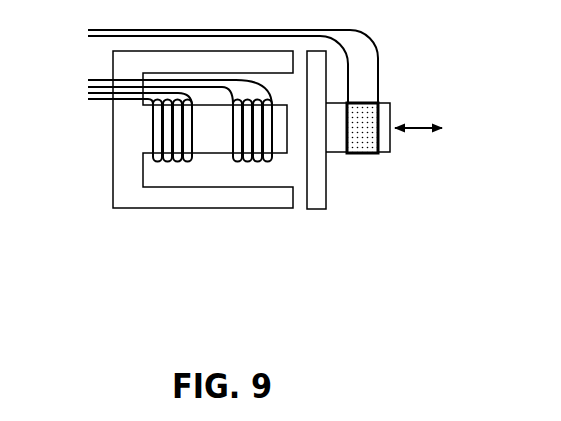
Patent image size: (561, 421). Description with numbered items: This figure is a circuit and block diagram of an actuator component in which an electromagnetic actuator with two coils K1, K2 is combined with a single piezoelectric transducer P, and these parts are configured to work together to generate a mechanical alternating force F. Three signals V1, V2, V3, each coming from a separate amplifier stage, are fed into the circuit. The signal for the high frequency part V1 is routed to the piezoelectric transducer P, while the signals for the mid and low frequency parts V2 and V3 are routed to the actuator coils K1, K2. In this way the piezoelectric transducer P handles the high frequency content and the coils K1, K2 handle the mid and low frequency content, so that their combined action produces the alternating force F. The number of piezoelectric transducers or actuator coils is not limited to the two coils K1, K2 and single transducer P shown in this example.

The high frequency signal V1 is at (220, 63).
The mid frequency signal V2 is at (167, 88).
The low frequency signal V3 is at (127, 100).
The actuator coil K1 is at (172, 165).
The actuator coil K2 is at (252, 165).
The piezoelectric transducer P is at (352, 157).
The mechanical alternating force F is at (418, 139).